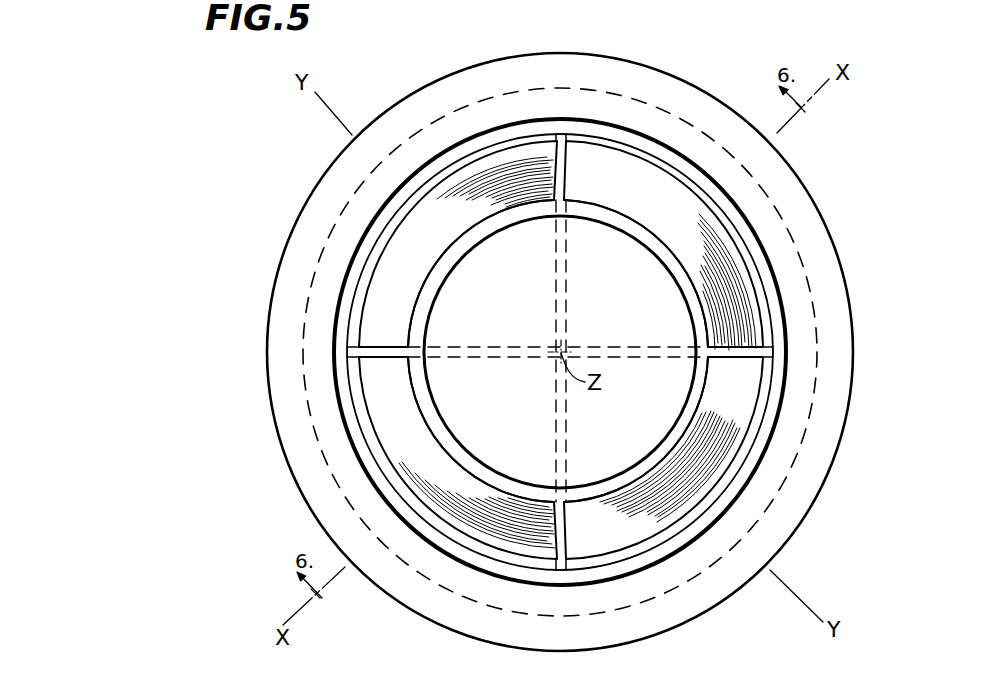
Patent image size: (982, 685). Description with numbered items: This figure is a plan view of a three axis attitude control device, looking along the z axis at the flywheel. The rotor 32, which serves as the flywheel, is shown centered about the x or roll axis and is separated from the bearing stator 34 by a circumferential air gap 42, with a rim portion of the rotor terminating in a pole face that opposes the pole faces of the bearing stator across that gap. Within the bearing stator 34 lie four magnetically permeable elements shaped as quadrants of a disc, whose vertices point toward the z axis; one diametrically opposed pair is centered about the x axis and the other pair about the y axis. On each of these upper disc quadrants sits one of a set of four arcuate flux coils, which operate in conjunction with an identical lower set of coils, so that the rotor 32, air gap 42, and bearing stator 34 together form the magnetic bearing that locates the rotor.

The rotor 32 is at (838, 288).
The bearing stator 34 is at (532, 147).
The circumferential air gap 42 is at (663, 147).